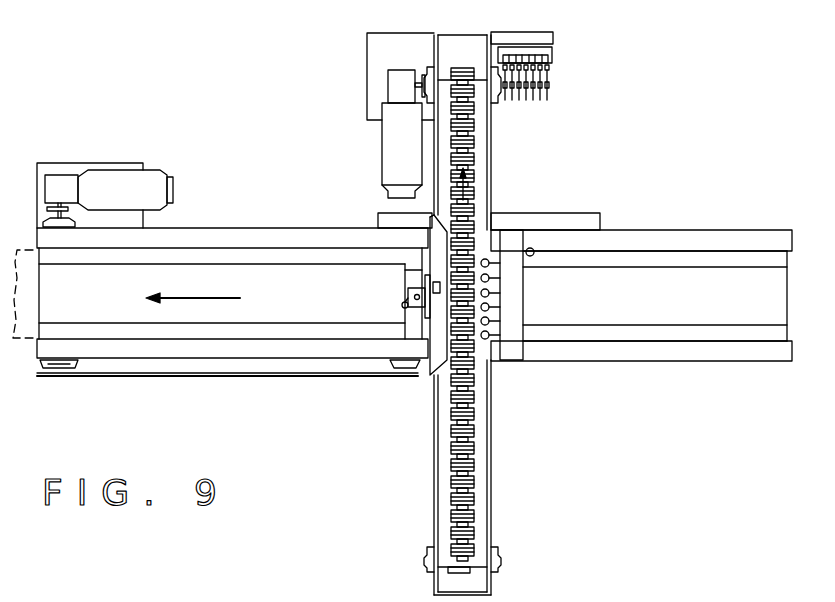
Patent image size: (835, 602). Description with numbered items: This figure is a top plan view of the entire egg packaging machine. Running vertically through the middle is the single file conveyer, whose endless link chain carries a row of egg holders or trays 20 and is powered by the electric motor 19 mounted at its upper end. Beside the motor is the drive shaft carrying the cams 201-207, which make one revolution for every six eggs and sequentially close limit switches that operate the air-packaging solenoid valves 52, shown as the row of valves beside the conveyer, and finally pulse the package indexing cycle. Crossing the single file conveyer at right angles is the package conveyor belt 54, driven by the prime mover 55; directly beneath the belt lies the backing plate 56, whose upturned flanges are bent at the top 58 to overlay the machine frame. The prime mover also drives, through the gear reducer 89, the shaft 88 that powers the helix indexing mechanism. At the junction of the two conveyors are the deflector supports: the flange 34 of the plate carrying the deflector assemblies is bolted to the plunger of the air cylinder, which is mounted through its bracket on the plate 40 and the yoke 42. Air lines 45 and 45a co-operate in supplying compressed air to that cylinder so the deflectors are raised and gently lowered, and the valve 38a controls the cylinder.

The electric motor 19 is at (408, 163).
The egg holder or tray 20 is at (475, 125).
The cams 201-207 is at (550, 78).
The flange 34 is at (405, 270).
The valve 38a is at (533, 250).
The plate 40 is at (428, 280).
The yoke 42 is at (440, 365).
The air line 45 is at (430, 580).
The air line 45a is at (403, 306).
The electric solenoid valve 52 is at (487, 340).
The conveyor belt 54 is at (106, 302).
The prime mover 55 is at (127, 195).
The backing plate 56 is at (515, 300).
The bent top of flange 58 is at (645, 230).
The shaft 88 is at (400, 374).
The gear reducer 89 is at (58, 185).